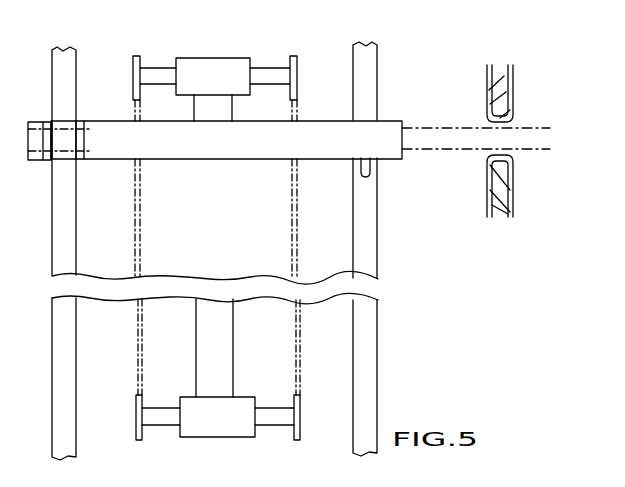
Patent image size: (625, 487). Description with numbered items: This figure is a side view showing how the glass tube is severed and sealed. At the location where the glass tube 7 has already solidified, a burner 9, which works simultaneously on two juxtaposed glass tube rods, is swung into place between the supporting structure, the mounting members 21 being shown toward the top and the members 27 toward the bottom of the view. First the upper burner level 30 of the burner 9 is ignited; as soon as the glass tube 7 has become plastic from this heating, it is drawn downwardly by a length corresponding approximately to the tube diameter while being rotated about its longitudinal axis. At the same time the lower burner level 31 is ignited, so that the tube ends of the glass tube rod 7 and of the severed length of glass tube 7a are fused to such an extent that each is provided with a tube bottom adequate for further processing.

The glass tube 7 is at (508, 74).
The severed length of glass tube 7a is at (513, 210).
The burner 9 is at (323, 136).
The bracket 21 is at (137, 61).
The bracket 27 is at (139, 437).
The upper burner level 30 is at (540, 127).
The burner level 31 is at (537, 151).